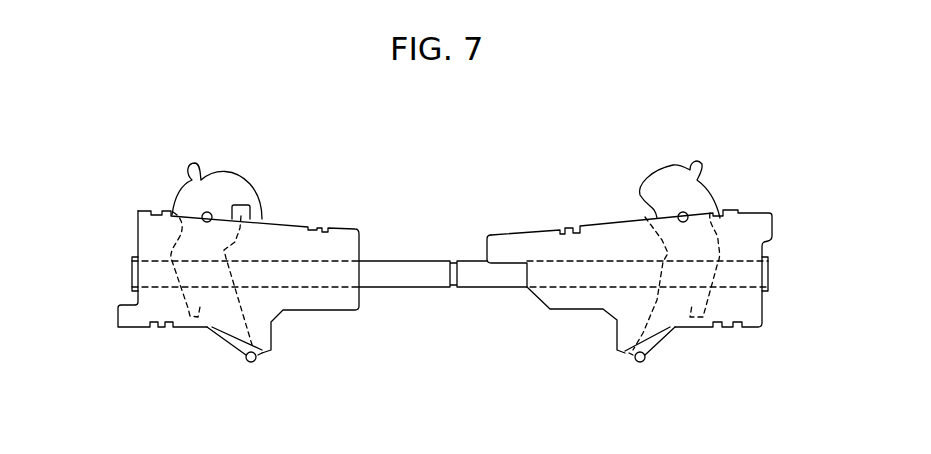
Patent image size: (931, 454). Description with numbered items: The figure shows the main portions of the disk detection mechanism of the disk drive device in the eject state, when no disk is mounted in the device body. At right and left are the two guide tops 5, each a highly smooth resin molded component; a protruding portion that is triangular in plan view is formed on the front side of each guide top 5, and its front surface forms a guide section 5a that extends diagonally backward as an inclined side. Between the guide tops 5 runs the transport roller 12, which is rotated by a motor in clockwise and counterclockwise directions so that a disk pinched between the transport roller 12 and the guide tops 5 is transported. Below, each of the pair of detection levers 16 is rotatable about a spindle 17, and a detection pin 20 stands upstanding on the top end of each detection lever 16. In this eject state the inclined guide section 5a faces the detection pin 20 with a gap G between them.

The guide top 5 is at (292, 218).
The guide section 5a is at (248, 352).
The transport roller 12 is at (422, 279).
The detection lever 16 is at (228, 177).
The spindle 17 is at (203, 214).
The detection pin 20 is at (249, 362).
The gap G is at (262, 355).